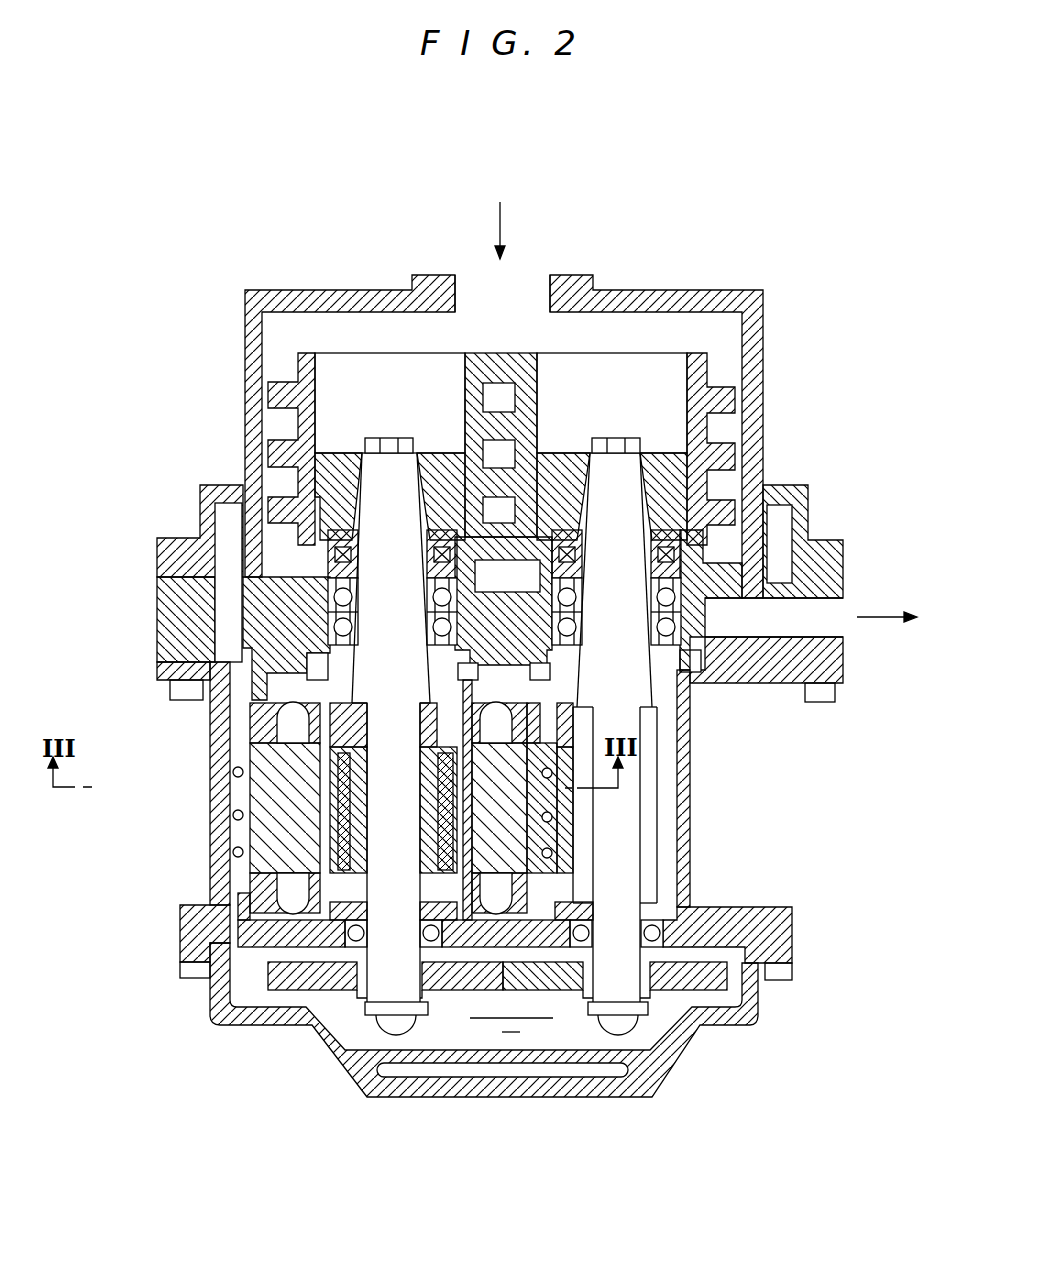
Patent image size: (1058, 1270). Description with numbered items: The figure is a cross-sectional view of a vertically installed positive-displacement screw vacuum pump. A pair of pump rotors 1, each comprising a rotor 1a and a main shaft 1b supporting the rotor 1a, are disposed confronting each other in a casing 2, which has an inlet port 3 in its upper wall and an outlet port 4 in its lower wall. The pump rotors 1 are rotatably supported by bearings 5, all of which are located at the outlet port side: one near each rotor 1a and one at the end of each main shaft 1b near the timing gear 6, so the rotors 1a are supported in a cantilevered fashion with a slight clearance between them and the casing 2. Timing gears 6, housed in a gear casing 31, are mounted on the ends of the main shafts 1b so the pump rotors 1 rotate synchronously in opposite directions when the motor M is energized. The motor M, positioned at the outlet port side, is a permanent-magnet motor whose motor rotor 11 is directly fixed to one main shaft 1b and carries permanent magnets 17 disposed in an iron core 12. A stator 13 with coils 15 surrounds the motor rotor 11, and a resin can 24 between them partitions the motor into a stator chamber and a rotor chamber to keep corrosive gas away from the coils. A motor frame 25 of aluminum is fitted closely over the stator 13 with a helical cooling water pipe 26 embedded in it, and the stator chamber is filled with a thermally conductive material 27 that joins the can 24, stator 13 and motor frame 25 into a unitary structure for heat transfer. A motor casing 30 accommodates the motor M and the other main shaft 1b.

The pump rotor 1 is at (502, 433).
The rotor 1a is at (300, 368).
The main shaft 1b is at (350, 492).
The casing 2 is at (765, 312).
The inlet port 3 is at (525, 296).
The outlet port 4 is at (826, 630).
The bearing 5 is at (265, 572).
The timing gear 6 is at (302, 990).
The motor rotor 11 is at (346, 733).
The iron core 12 is at (337, 768).
The stator 13 is at (283, 805).
The coil 15 is at (277, 917).
The permanent magnet 17 is at (340, 840).
The can 24 is at (277, 880).
The motor frame 25 is at (217, 850).
The cooling water pipe 26 is at (236, 772).
The thermally conductive material 27 is at (282, 942).
The motor casing 30 is at (690, 778).
The gear casing 31 is at (507, 1097).
The motor M is at (412, 736).